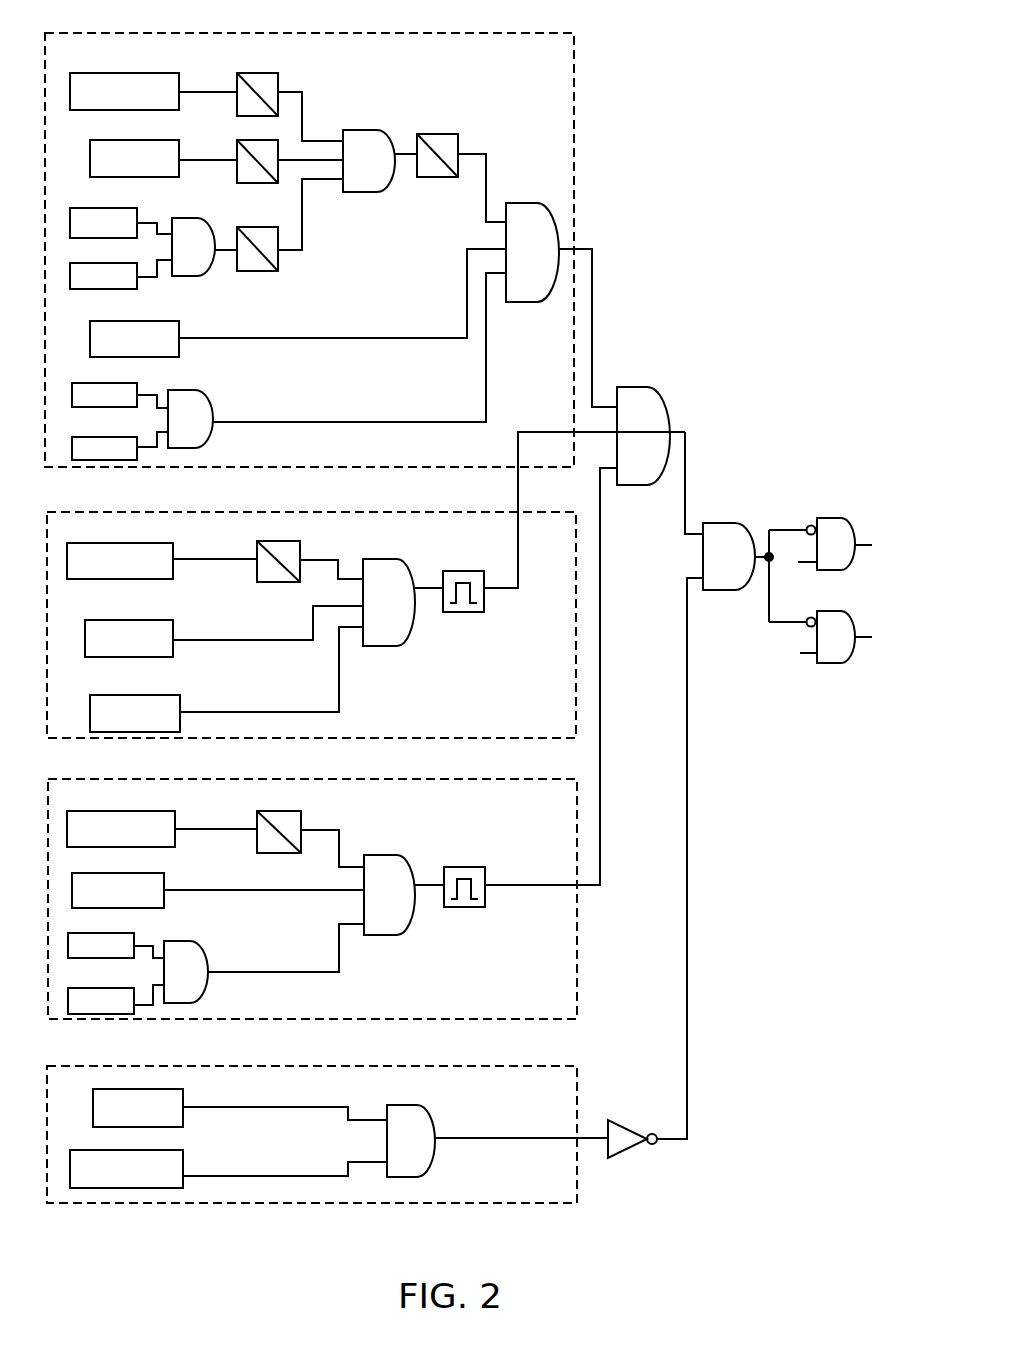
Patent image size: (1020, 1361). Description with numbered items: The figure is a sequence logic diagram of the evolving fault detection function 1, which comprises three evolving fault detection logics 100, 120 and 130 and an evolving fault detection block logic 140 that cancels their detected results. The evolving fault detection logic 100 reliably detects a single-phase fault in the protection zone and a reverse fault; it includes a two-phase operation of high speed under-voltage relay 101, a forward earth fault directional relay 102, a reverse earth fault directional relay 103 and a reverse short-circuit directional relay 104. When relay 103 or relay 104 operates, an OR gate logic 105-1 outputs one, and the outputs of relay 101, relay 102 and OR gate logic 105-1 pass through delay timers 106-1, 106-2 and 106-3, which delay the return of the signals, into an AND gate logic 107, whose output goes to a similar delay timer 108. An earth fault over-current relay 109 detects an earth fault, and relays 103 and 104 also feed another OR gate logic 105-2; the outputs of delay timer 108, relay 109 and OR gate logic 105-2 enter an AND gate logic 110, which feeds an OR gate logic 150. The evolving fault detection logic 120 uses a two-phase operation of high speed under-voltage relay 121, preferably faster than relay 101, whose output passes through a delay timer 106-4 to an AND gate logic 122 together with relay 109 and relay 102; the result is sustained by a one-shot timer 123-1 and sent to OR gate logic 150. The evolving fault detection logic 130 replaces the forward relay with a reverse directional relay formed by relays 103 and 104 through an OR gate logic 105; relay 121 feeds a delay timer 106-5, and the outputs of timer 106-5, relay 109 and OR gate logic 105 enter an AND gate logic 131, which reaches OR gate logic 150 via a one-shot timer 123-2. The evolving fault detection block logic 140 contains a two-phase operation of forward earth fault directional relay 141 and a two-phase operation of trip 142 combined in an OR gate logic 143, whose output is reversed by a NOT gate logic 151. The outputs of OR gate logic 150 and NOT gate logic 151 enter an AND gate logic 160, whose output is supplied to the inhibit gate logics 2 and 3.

The evolving fault detection function 1 is at (641, 178).
The inhibit gate logic 2 is at (836, 518).
The inhibit gate logic 3 is at (839, 611).
The evolving fault detection logic 100 is at (68, 33).
The two-phase operation of high speed under-voltage relay 101 is at (126, 73).
The forward earth fault directional relay 102 is at (132, 140).
The reverse earth fault directional relay 103 is at (106, 208).
The reverse short-circuit directional relay 104 is at (106, 263).
The OR gate logic 105 is at (200, 948).
The OR gate logic 105-1 is at (188, 216).
The OR gate logic 105-2 is at (214, 416).
The delay timer 106-1 is at (285, 92).
The delay timer 106-2 is at (285, 147).
The delay timer 106-3 is at (280, 268).
The delay timer 106-4 is at (304, 546).
The delay timer 106-5 is at (300, 816).
The AND gate logic 107 is at (361, 130).
The delay timer 108 is at (437, 133).
The earth fault over-current relay 109 is at (181, 328).
The AND gate logic 110 is at (519, 203).
The evolving fault detection logic 120 is at (56, 512).
The two-phase operation of high speed under-voltage relay 121 is at (175, 547).
The AND gate logic 122 is at (409, 559).
The one-shot timer 123-1 is at (465, 571).
The one-shot timer 123-2 is at (484, 868).
The evolving fault detection logic 130 is at (62, 779).
The AND gate logic 131 is at (401, 856).
The evolving fault detection block logic 140 is at (62, 1066).
The two-phase operation of forward earth fault directional relay 141 is at (184, 1096).
The two-phase operation of trip 142 is at (184, 1157).
The OR gate logic 143 is at (420, 1110).
The OR gate logic 150 is at (630, 388).
The NOT gate logic 151 is at (633, 1127).
The AND gate logic 160 is at (717, 524).